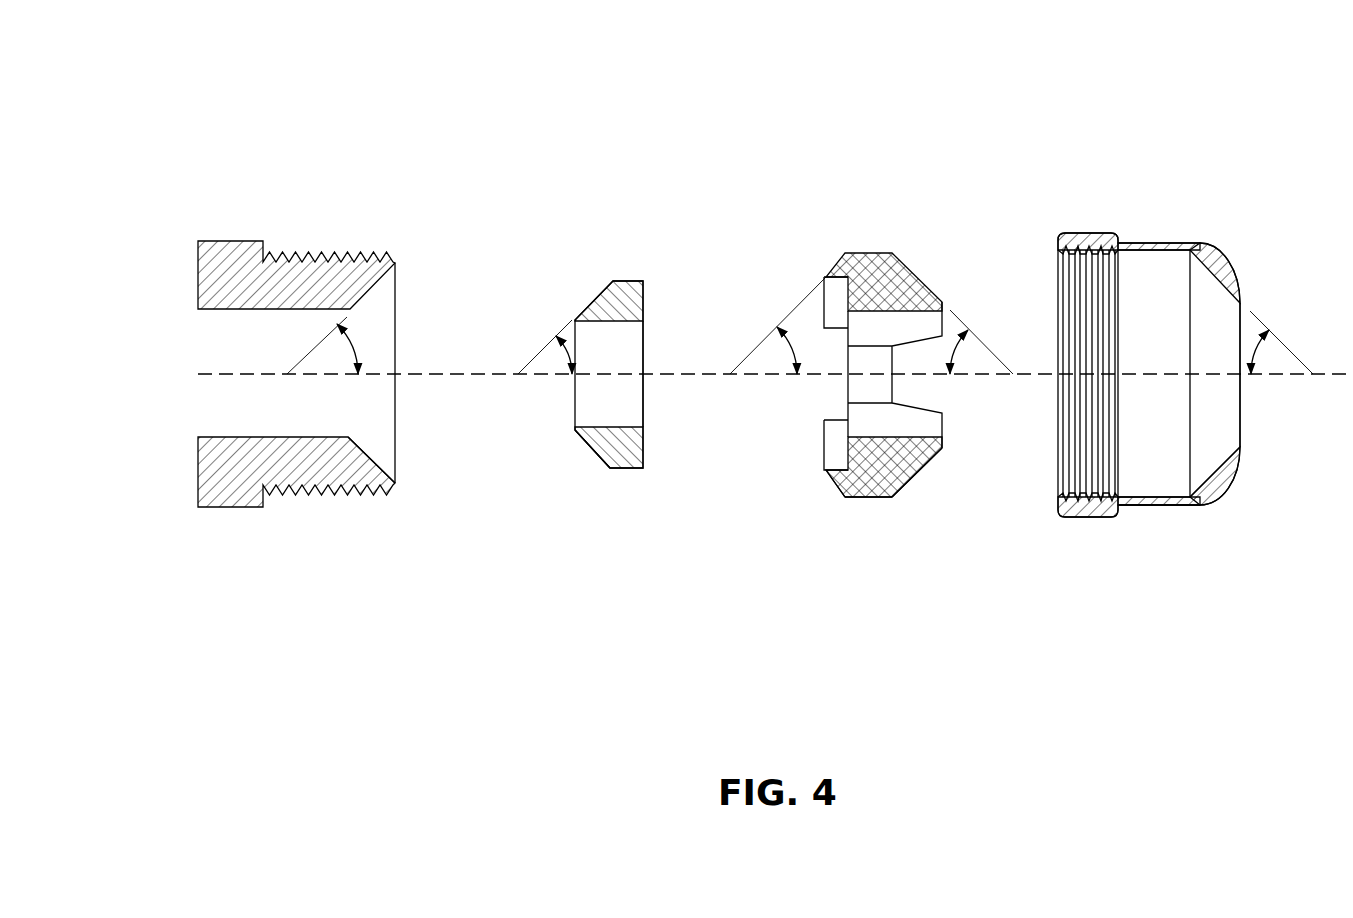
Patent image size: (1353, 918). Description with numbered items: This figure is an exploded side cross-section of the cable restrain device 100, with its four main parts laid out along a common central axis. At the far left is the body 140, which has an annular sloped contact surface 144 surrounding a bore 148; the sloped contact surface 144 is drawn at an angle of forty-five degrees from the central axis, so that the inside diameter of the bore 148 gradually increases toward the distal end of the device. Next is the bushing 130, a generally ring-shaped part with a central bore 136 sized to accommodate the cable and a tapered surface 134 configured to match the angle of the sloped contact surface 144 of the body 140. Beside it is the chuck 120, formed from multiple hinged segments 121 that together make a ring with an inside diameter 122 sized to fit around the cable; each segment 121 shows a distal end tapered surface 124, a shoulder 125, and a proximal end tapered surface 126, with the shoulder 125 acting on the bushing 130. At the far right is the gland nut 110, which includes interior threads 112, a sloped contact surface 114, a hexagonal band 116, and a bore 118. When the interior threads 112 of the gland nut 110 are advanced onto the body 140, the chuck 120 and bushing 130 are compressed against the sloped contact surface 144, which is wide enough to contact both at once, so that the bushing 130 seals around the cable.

The cable restrain device 100 is at (347, 49).
The gland nut 110 is at (1157, 230).
The interior threads 112 is at (1069, 467).
The sloped contact surface 114 is at (1217, 444).
The hexagonal band 116 is at (1092, 518).
The bore 118 is at (1243, 393).
The chuck 120 is at (863, 226).
The segments 121 is at (883, 498).
The inside diameter 122 is at (925, 317).
The distal end tapered surface 124 is at (923, 482).
The shoulder 125 is at (832, 453).
The proximal end tapered surface 126 is at (825, 490).
The bushing 130 is at (621, 259).
The tapered surface 134 is at (599, 461).
The central bore 136 is at (642, 412).
The body 140 is at (282, 235).
The sloped contact surface 144 is at (384, 460).
The bore 148 is at (398, 410).